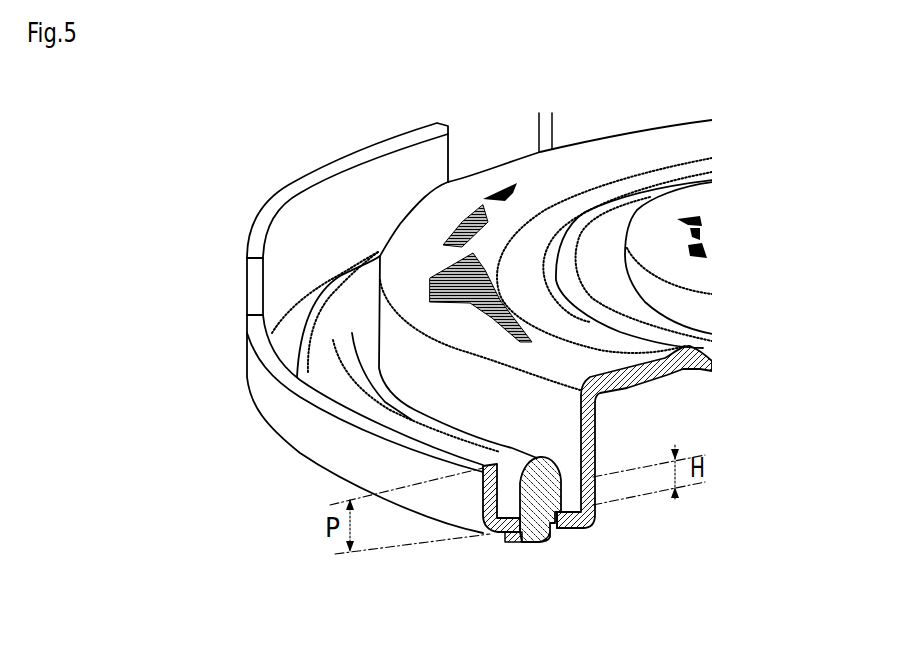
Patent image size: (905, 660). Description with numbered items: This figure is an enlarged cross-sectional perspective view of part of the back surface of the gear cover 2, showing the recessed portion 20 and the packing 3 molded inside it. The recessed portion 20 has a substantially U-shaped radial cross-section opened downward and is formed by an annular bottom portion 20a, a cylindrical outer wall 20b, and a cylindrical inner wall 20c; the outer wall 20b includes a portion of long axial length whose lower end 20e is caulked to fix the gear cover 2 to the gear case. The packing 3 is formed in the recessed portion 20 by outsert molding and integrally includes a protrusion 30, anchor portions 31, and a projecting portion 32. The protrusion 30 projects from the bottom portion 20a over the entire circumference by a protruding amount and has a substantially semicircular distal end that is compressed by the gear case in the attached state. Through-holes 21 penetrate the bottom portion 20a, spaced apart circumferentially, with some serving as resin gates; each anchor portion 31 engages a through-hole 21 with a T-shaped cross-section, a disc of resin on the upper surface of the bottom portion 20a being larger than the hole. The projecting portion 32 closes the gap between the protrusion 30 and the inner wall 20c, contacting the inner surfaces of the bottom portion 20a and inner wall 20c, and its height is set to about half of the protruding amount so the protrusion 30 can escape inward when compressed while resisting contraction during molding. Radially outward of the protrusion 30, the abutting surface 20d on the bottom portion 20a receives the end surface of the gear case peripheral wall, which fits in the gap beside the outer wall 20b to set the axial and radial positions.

The gear cover 2 is at (206, 208).
The packing 3 is at (340, 256).
The recessed portion 20 is at (606, 417).
The bottom portion 20a is at (498, 534).
The outer wall 20b is at (310, 425).
The inner wall 20c is at (594, 463).
The abutting surface 20d is at (287, 337).
The lower end 20e is at (362, 180).
The through-hole 21 is at (541, 530).
The protrusion 30 is at (538, 457).
The anchor portion 31 is at (532, 543).
The projecting portion 32 is at (582, 506).